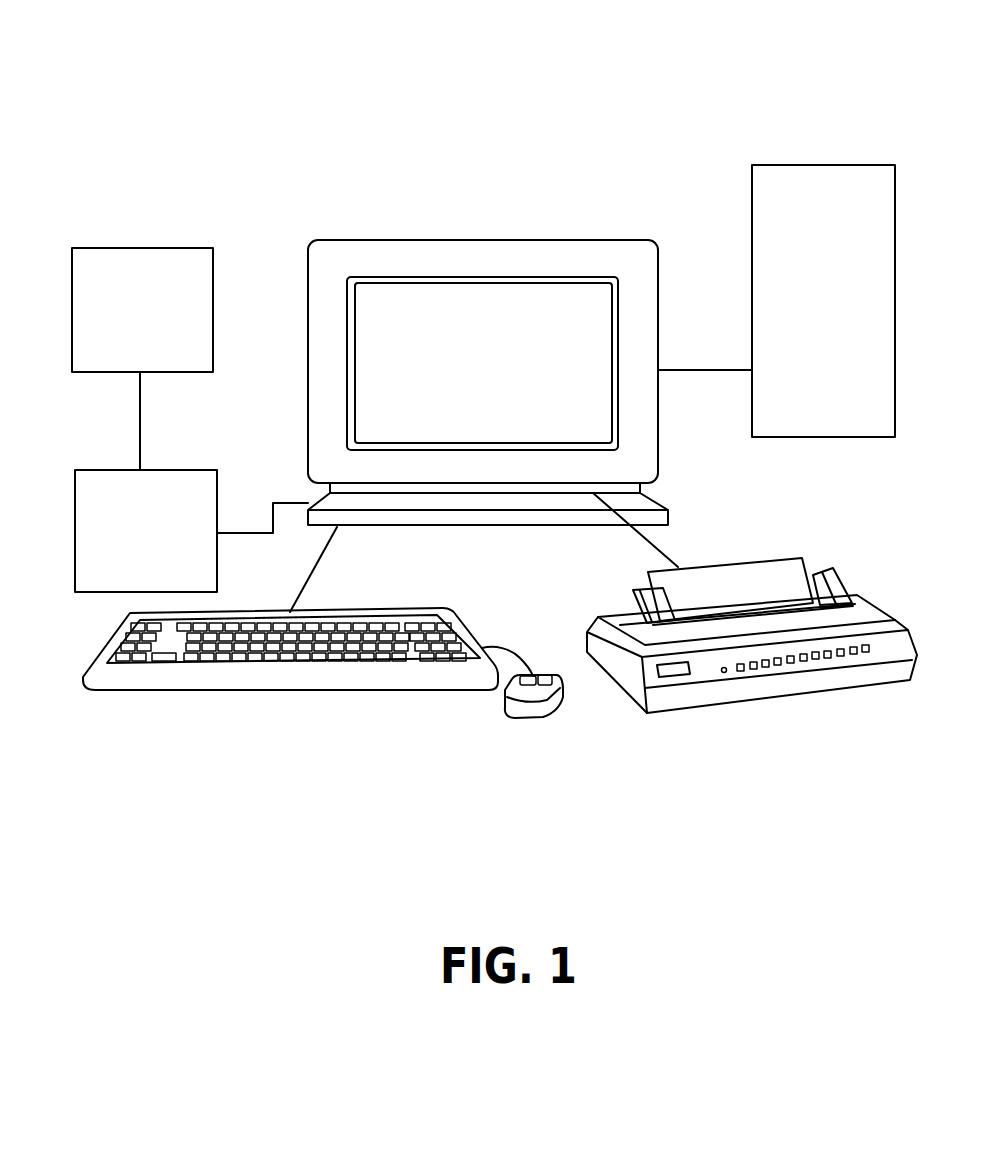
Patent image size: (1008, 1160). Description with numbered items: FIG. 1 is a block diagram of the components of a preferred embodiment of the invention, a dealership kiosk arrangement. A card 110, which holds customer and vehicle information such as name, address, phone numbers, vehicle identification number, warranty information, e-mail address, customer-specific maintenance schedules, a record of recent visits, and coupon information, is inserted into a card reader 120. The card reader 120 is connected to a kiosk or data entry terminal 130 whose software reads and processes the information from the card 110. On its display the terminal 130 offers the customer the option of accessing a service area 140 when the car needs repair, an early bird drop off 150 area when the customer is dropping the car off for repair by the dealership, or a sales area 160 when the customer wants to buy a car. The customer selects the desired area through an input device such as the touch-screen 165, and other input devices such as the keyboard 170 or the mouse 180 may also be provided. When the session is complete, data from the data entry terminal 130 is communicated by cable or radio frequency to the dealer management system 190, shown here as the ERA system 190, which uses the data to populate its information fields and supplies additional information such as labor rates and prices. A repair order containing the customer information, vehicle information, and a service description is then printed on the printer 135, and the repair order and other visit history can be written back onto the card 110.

The card 110 is at (142, 310).
The card reader 120 is at (146, 531).
The kiosk or data entry terminal 130 is at (525, 240).
The printer 135 is at (773, 698).
The service area 140 is at (452, 336).
The early bird drop off area 150 is at (484, 370).
The sales area 160 is at (443, 401).
The touch-screen 165 is at (461, 266).
The keyboard 170 is at (197, 690).
The mouse 180 is at (537, 718).
The dealer management system (ERA system) 190 is at (823, 301).